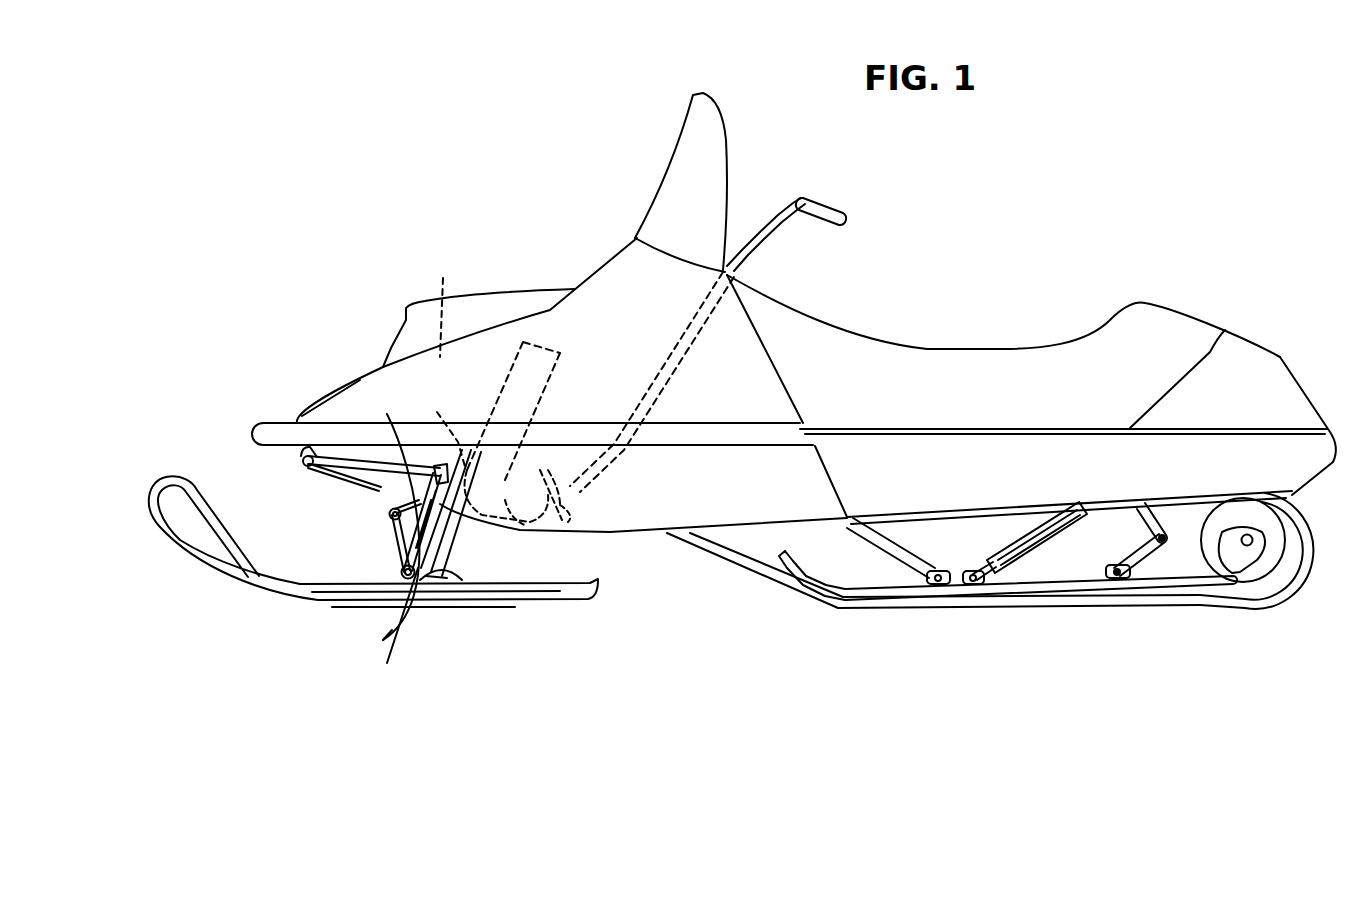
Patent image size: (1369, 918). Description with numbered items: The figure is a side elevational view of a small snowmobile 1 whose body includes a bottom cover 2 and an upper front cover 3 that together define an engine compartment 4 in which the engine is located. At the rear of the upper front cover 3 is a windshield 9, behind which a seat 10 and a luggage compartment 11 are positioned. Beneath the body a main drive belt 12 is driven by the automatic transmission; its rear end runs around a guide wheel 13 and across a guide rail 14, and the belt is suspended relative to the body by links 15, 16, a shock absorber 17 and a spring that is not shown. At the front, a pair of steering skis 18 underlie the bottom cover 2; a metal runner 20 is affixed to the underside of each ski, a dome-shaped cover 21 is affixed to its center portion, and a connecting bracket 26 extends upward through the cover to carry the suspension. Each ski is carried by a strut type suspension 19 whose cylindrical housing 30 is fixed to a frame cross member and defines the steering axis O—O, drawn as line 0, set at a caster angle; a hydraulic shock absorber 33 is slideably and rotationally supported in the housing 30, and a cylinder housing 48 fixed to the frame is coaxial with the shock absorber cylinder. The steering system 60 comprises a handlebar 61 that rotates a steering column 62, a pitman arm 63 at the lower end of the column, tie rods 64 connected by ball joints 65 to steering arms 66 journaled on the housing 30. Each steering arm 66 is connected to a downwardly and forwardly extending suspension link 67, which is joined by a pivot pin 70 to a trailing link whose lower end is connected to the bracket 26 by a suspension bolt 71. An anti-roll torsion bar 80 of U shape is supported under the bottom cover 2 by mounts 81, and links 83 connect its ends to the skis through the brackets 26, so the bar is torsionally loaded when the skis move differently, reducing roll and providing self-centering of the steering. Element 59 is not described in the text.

The snowmobile 1 is at (888, 445).
The bottom cover 2 is at (633, 530).
The upper front cover 3 is at (357, 377).
The engine compartment 4 is at (434, 304).
The windshield 9 is at (673, 150).
The seat 10 is at (1003, 343).
The luggage compartment 11 is at (1287, 360).
The main drive belt 12 is at (720, 557).
The guide wheel 13 is at (1277, 543).
The guide rail 14 is at (800, 577).
The link 15 is at (878, 542).
The link 16 is at (1140, 543).
The shock absorber 17 is at (1003, 548).
The front steering ski 18 is at (227, 577).
The strut type suspension 19 is at (464, 541).
The metal runner 20 is at (340, 610).
The cover 21 is at (326, 585).
The connecting bracket 26 is at (460, 582).
The cylindrical housing 30 is at (436, 429).
The hydraulic shock absorber 33 is at (455, 556).
The cylinder housing 48 is at (520, 384).
The front shock absorber 59 is at (398, 545).
The steering system 60 is at (770, 240).
The handlebar 61 is at (828, 200).
The steering column 62 is at (600, 472).
The pitman arm 63 is at (568, 522).
The tie rod 64 is at (562, 485).
The ball joint 65 is at (507, 488).
The steering arm 66 is at (530, 528).
The suspension link 67 is at (389, 517).
The pivot pin 70 is at (390, 514).
The suspension bolt 71 is at (398, 572).
The anti-roll torsion bar 80 is at (306, 462).
The mount 81 is at (350, 480).
The link 83 is at (373, 634).
The steering axis O—O 0 is at (439, 558).